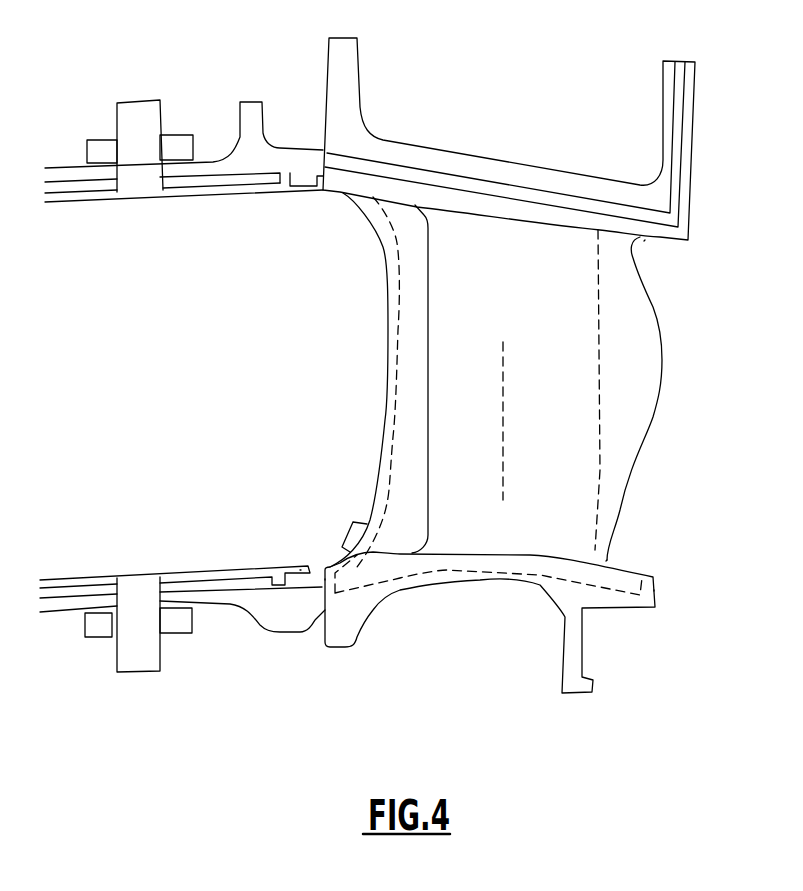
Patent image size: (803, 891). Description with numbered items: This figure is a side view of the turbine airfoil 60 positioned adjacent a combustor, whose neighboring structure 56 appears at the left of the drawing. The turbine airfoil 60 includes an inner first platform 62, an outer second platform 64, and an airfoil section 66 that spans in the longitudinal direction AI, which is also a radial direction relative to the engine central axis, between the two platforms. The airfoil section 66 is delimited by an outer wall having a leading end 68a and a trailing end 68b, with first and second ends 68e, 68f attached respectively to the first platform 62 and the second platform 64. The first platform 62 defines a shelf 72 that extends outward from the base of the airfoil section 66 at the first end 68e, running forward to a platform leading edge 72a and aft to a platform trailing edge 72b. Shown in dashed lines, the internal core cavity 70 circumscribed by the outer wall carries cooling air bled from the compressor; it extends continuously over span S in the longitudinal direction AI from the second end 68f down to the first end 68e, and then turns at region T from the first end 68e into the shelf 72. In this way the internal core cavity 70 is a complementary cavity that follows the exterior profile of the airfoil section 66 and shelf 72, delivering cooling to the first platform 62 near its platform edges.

The forward mount/bracket assembly 56 is at (182, 598).
The turbine airfoil 60 is at (520, 393).
The first platform 62 is at (514, 607).
The second platform 64 is at (665, 233).
The airfoil section 66 is at (520, 393).
The leading end 68a is at (383, 417).
The trailing end 68b is at (660, 415).
The first end 68e is at (610, 558).
The second end 68f is at (645, 240).
The internal core cavity 70 is at (397, 372).
The shelf 72 is at (335, 557).
The platform leading edge 72a is at (266, 554).
The platform trailing edge 72b is at (657, 593).
The span S is at (431, 378).
The region T is at (353, 522).
The longitudinal direction AI is at (503, 430).